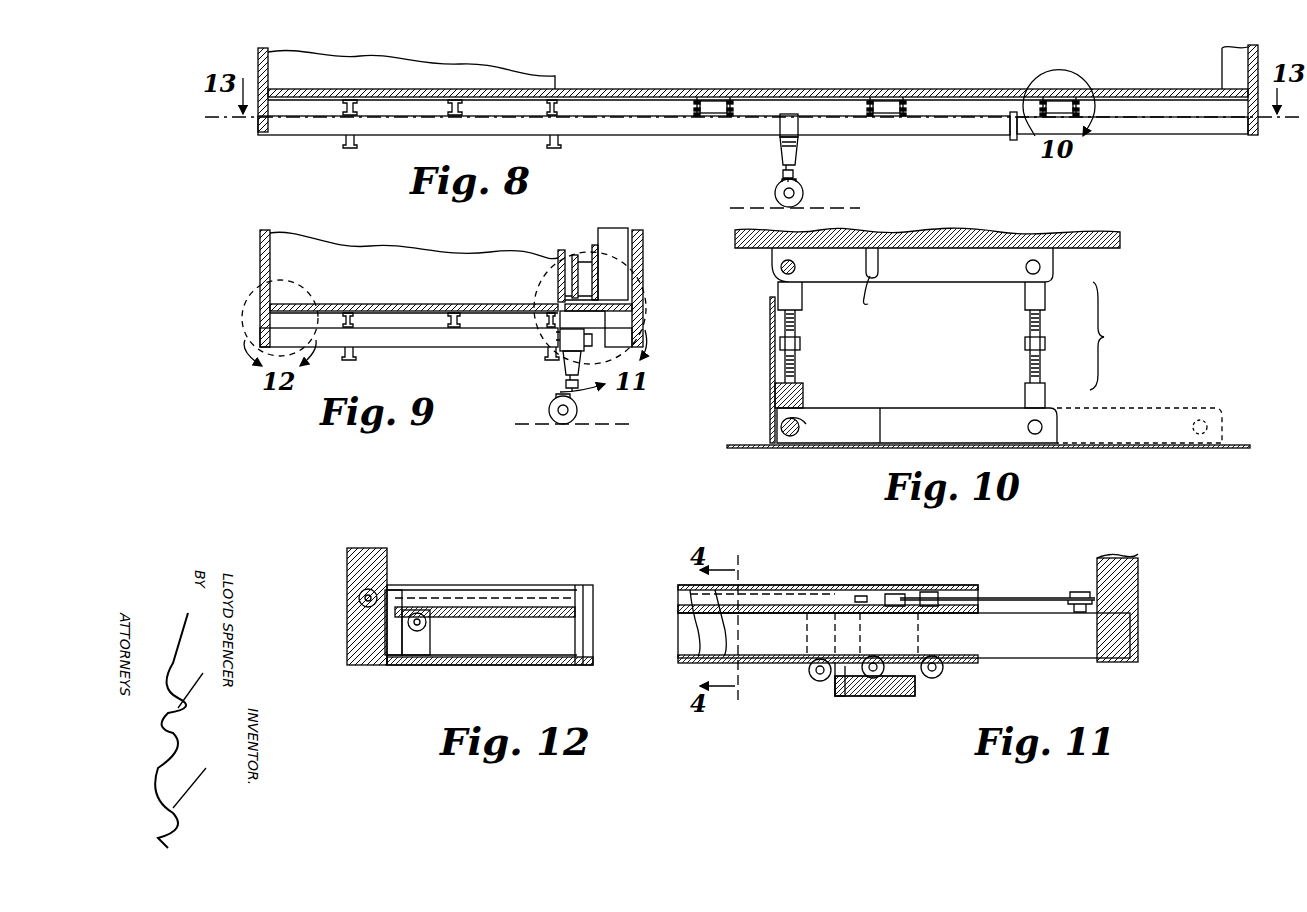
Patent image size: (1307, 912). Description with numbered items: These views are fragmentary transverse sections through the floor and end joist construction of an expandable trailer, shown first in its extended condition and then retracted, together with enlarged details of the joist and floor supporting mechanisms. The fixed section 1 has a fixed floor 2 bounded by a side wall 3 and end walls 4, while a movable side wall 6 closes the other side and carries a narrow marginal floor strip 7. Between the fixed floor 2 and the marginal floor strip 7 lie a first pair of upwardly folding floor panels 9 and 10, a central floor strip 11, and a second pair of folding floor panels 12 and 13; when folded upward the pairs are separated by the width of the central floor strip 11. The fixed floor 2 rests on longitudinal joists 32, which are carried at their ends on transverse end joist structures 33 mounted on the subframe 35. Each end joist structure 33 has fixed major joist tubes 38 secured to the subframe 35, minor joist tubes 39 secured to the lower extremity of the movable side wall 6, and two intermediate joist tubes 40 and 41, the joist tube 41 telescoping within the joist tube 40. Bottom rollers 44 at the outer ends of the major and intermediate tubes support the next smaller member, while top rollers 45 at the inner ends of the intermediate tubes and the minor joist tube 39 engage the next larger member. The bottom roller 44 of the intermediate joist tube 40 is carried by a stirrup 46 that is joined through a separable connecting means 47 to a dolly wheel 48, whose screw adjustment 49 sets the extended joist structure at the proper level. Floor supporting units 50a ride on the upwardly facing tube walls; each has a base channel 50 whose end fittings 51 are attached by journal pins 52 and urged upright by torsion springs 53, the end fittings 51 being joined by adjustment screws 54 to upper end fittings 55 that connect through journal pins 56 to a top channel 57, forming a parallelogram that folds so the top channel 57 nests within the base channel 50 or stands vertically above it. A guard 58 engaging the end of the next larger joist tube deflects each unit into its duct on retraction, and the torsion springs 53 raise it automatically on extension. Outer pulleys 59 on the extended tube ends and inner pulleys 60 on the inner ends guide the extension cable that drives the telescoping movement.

In FIG. 8, the fixed section 1 is at (400, 74).
In FIG. 9, the fixed section 1 is at (388, 262).
In FIG. 8, the fixed floor 2 is at (470, 94).
In FIG. 9, the fixed floor 2 is at (397, 304).
In FIG. 8, the side wall 3 is at (268, 74).
In FIG. 9, the side wall 3 is at (270, 258).
In FIG. 12, the side wall 3 is at (370, 558).
In FIG. 8, the end walls 4 is at (384, 72).
In FIG. 9, the end walls 4 is at (356, 258).
In FIG. 8, the movable side wall 6 is at (1248, 56).
In FIG. 9, the movable side wall 6 is at (643, 240).
In FIG. 11, the movable side wall 6 is at (1130, 574).
In FIG. 8, the marginal floor strip 7 is at (1240, 96).
In FIG. 9, the marginal floor strip 7 is at (628, 302).
In FIG. 8, the floor panel 9 is at (598, 94).
In FIG. 9, the floor panel 9 is at (556, 254).
In FIG. 8, the floor panel 10 is at (770, 92).
In FIG. 9, the floor panel 10 is at (572, 256).
In FIG. 8, the central floor strip 11 is at (884, 92).
In FIG. 9, the central floor strip 11 is at (582, 320).
In FIG. 8, the floor panel 12 is at (984, 92).
In FIG. 9, the floor panel 12 is at (598, 246).
In FIG. 10, the floor panel 12 is at (893, 234).
In FIG. 8, the floor panel 13 is at (1120, 92).
In FIG. 9, the floor panel 13 is at (602, 256).
In FIG. 10, the floor panel 13 is at (965, 218).
In FIG. 8, the longitudinal joists 32 is at (352, 100).
In FIG. 9, the longitudinal joists 32 is at (348, 312).
In FIG. 8, the end joist structures 33 is at (392, 120).
In FIG. 9, the end joist structures 33 is at (392, 332).
In FIG. 8, the subframe 35 is at (350, 148).
In FIG. 9, the subframe 35 is at (346, 352).
In FIG. 8, the major joist tubes 38 is at (458, 128).
In FIG. 9, the major joist tubes 38 is at (454, 342).
In FIG. 12, the major joist tubes 38 is at (398, 598).
In FIG. 11, the major joist tubes 38 is at (688, 586).
In FIG. 8, the minor joist tubes 39 is at (1196, 130).
In FIG. 9, the minor joist tubes 39 is at (616, 340).
In FIG. 12, the minor joist tubes 39 is at (585, 620).
In FIG. 11, the minor joist tubes 39 is at (1066, 644).
In FIG. 8, the intermediate joist tube 40 is at (640, 128).
In FIG. 12, the intermediate joist tube 40 is at (583, 636).
In FIG. 11, the intermediate joist tube 40 is at (698, 628).
In FIG. 8, the intermediate joist tube 41 is at (962, 128).
In FIG. 12, the intermediate joist tube 41 is at (583, 652).
In FIG. 11, the intermediate joist tube 41 is at (717, 636).
In FIG. 11, the bottom rollers 44 is at (812, 678).
In FIG. 12, the top rollers 45 is at (384, 596).
In FIG. 8, the stirrup 46 is at (796, 128).
In FIG. 9, the stirrup 46 is at (576, 352).
In FIG. 11, the stirrup 46 is at (840, 690).
In FIG. 8, the separable connecting means 47 is at (780, 140).
In FIG. 9, the separable connecting means 47 is at (572, 363).
In FIG. 11, the separable connecting means 47 is at (860, 700).
In FIG. 8, the dolly wheel 48 is at (774, 196).
In FIG. 9, the dolly wheel 48 is at (562, 422).
In FIG. 8, the screw adjustment 49 is at (796, 174).
In FIG. 9, the screw adjustment 49 is at (566, 386).
In FIG. 8, the base channel 50 is at (712, 120).
In FIG. 10, the base channel 50 is at (948, 408).
In FIG. 8, the floor supporting units 50a is at (690, 104).
In FIG. 10, the floor supporting units 50a is at (1115, 336).
In FIG. 10, the end fittings 51 is at (803, 396).
In FIG. 10, the journal pins 52 is at (790, 436).
In FIG. 10, the torsion springs 53 is at (804, 424).
In FIG. 10, the adjustment screws 54 is at (801, 344).
In FIG. 10, the upper end fittings 55 is at (803, 298).
In FIG. 10, the journal pins 56 is at (780, 270).
In FIG. 8, the top channel 57 is at (704, 96).
In FIG. 10, the top channel 57 is at (1180, 404).
In FIG. 10, the guard 58 is at (772, 340).
In FIG. 11, the outer pulleys 59 is at (928, 592).
In FIG. 12, the inner pulleys 60 is at (402, 602).